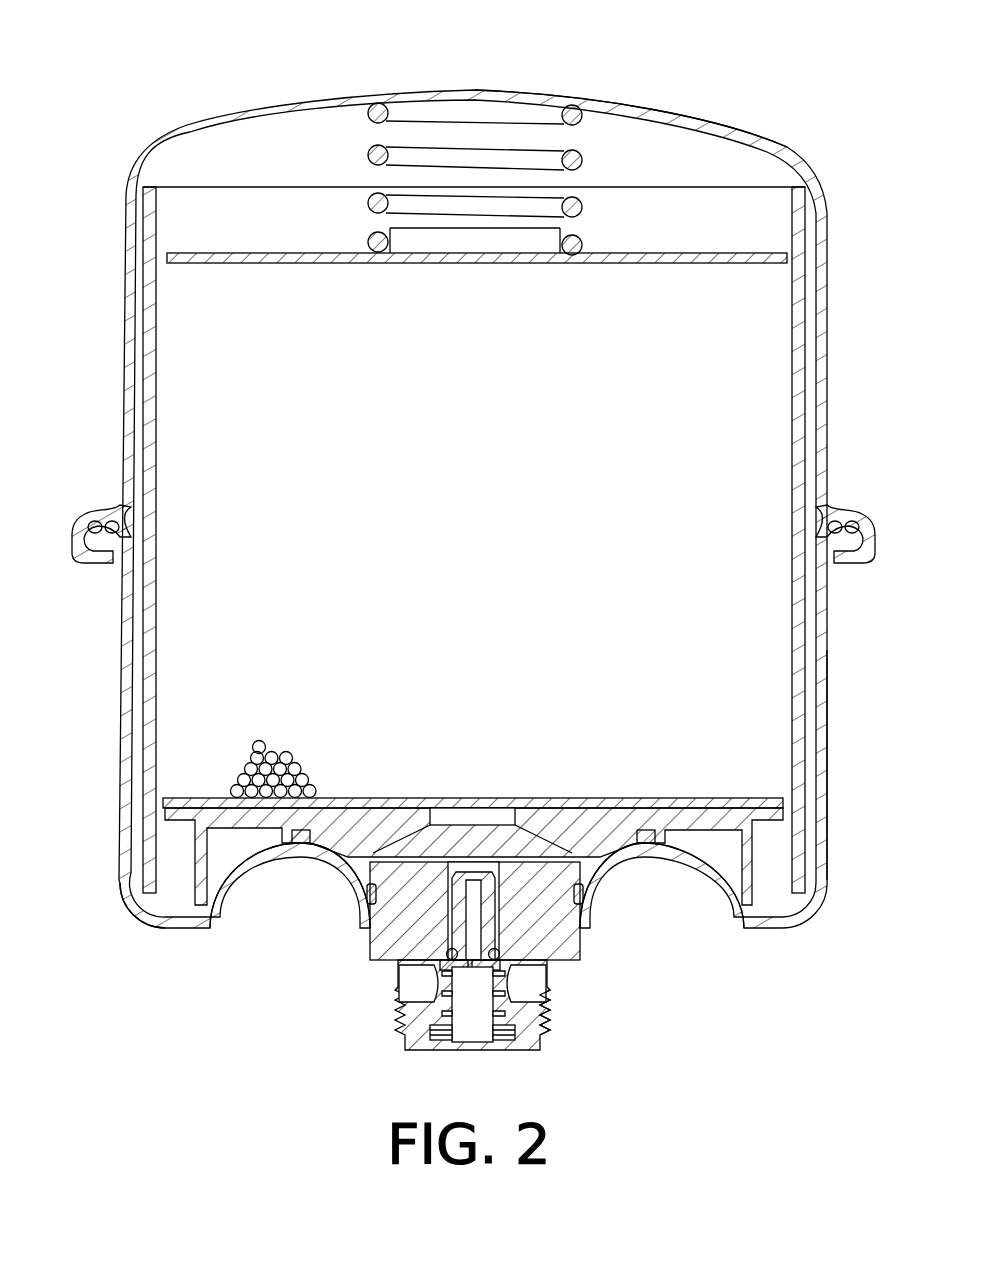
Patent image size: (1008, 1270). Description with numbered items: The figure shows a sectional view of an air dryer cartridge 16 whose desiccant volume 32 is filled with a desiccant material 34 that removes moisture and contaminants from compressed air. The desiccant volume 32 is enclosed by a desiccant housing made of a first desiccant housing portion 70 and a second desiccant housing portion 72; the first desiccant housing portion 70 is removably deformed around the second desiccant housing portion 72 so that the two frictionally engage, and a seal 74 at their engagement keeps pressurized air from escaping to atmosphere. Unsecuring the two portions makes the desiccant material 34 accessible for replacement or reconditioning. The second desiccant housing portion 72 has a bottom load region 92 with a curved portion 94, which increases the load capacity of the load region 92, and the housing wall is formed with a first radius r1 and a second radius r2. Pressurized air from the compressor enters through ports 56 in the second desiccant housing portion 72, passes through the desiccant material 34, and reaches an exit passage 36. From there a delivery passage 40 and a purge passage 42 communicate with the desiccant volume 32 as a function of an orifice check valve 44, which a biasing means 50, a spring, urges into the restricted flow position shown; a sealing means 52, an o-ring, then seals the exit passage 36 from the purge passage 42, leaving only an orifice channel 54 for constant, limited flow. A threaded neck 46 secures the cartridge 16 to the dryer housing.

The cartridge 16 is at (717, 110).
The desiccant volume 32 is at (240, 395).
The desiccant material 34 is at (262, 746).
The exit passage 36 is at (487, 872).
The delivery passage 40 is at (423, 1003).
The purge passage 42 is at (486, 1044).
The orifice check valve 44 is at (474, 1030).
The threaded neck 46 is at (548, 1040).
The biasing means 50 is at (428, 1028).
The sealing means 52 is at (444, 955).
The orifice channel 54 is at (468, 884).
The ports 56 is at (708, 897).
The first desiccant housing portion 70 is at (830, 388).
The second desiccant housing portion 72 is at (829, 702).
The seal 74 is at (837, 528).
The bottom load region 92 is at (582, 910).
The curved portion 94 is at (692, 857).
The first radius r1 is at (327, 864).
The second radius r2 is at (180, 866).